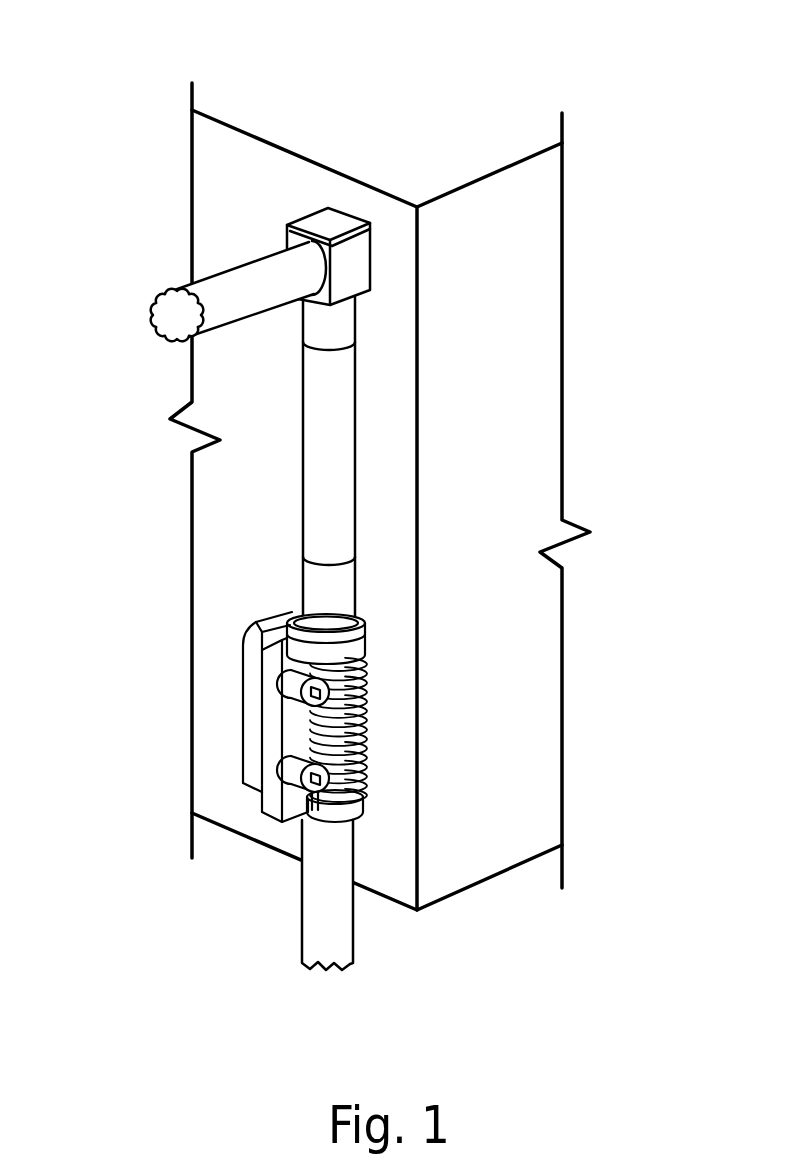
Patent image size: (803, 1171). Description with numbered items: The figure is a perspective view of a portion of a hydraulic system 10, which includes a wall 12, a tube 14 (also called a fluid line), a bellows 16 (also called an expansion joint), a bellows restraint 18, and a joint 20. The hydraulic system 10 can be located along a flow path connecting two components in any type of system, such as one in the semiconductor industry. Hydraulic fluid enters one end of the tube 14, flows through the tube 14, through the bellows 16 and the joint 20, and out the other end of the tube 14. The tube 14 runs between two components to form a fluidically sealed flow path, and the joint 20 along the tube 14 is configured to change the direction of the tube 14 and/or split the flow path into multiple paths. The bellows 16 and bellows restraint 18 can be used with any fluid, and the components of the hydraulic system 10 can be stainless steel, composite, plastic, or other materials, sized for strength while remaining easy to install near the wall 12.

The hydraulic system 10 is at (646, 105).
The wall 12 is at (232, 525).
The tube 14 is at (247, 278).
The bellows 16 is at (370, 725).
The bellows restraint 18 is at (230, 724).
The joint 20 is at (332, 225).